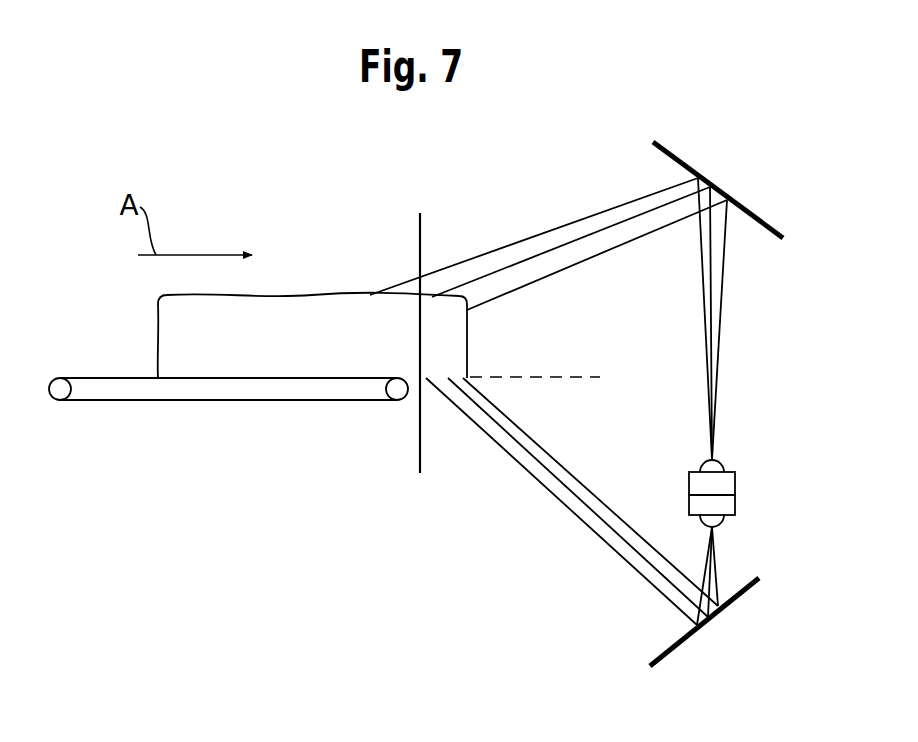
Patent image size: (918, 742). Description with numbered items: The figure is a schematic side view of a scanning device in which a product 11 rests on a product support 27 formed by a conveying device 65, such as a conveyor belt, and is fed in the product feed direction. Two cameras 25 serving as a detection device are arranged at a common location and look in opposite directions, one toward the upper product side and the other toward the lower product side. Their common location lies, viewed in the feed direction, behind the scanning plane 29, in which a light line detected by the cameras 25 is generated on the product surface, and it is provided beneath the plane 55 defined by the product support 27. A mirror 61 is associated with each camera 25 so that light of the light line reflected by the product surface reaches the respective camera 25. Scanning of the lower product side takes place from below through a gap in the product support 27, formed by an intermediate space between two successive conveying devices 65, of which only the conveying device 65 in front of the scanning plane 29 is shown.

The product 11 is at (297, 349).
The camera 25 is at (729, 485).
The product support 27 is at (92, 374).
The scanning plane 29 is at (419, 210).
The plane 55 is at (565, 377).
The mirror 61 is at (760, 219).
The conveying device 65 is at (145, 402).